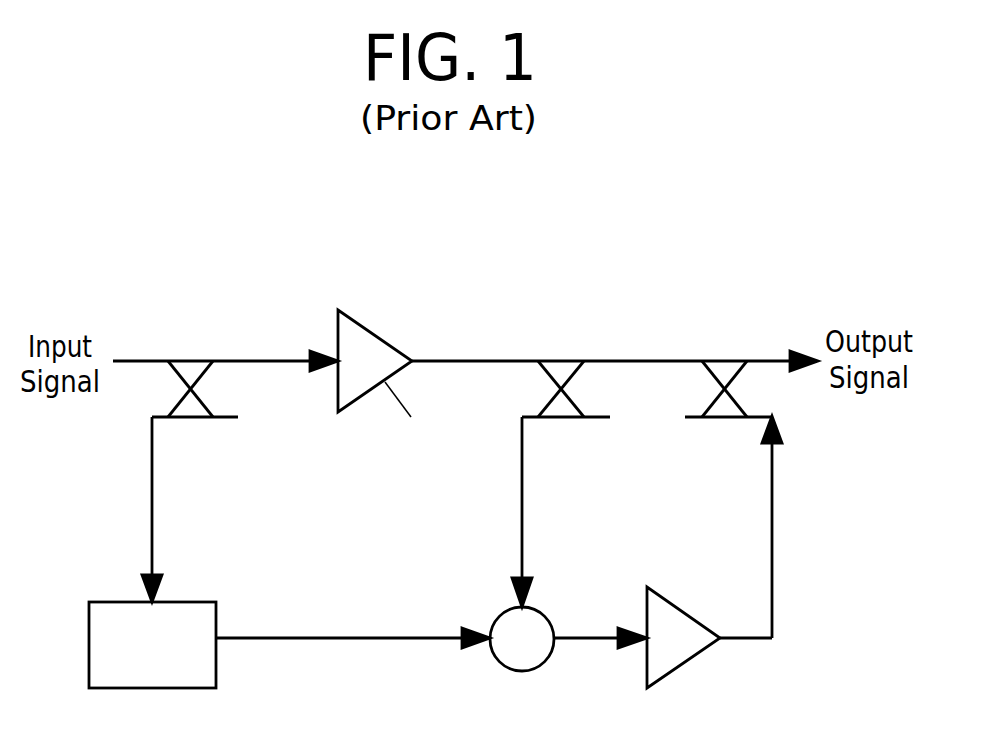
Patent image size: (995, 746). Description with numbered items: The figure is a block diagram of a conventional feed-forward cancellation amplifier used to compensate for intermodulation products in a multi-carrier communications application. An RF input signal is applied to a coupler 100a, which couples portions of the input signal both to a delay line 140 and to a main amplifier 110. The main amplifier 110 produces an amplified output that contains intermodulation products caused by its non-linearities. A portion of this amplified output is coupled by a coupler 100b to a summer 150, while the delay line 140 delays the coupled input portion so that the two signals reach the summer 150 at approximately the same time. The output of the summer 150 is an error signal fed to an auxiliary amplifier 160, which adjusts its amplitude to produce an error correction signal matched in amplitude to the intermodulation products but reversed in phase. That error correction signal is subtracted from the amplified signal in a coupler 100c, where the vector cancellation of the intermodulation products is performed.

The coupler 100a is at (221, 417).
The coupler 100b is at (591, 415).
The coupler 100c is at (694, 360).
The main amplifier 110 is at (378, 369).
The delay line 140 is at (181, 612).
The summer 150 is at (481, 618).
The auxiliary amplifier 160 is at (703, 627).